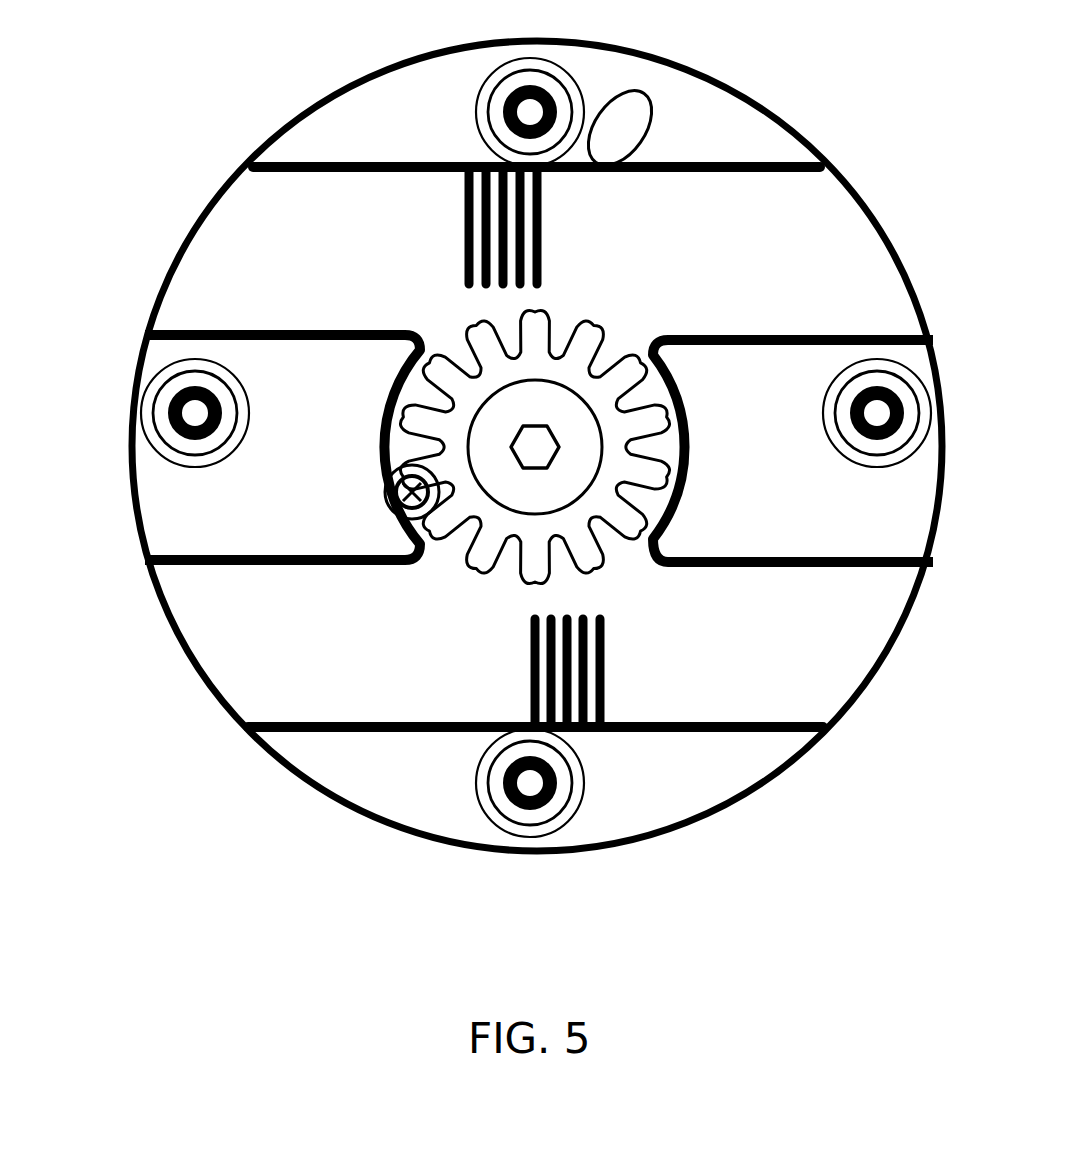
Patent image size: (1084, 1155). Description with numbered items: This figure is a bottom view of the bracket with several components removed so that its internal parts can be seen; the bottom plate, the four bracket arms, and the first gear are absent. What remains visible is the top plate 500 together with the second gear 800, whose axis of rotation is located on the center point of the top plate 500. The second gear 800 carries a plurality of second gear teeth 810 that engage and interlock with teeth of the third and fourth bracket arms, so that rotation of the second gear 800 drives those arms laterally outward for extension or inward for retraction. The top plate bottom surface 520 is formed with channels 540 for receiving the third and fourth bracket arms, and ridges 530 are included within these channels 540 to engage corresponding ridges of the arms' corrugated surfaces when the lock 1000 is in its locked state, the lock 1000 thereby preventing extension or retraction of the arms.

The top plate 500 is at (703, 823).
The top plate bottom surface 520 is at (623, 798).
The ridges 530 is at (535, 678).
The channels 540 is at (233, 258).
The second gear 800 is at (593, 407).
The second gear teeth 810 is at (672, 445).
The lock 1000 is at (528, 440).